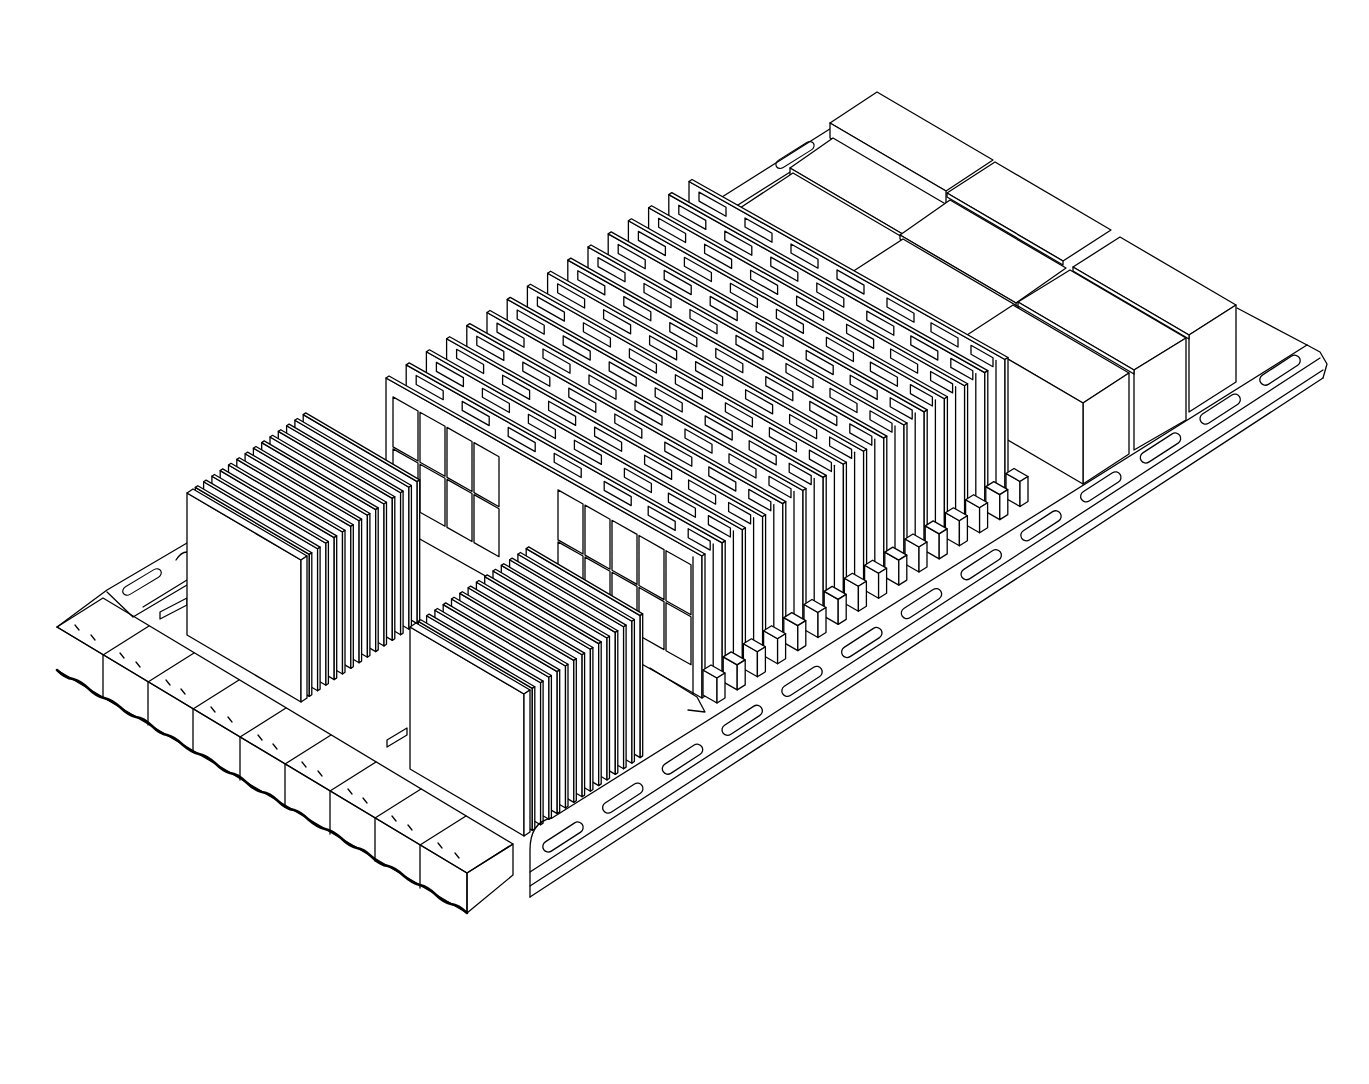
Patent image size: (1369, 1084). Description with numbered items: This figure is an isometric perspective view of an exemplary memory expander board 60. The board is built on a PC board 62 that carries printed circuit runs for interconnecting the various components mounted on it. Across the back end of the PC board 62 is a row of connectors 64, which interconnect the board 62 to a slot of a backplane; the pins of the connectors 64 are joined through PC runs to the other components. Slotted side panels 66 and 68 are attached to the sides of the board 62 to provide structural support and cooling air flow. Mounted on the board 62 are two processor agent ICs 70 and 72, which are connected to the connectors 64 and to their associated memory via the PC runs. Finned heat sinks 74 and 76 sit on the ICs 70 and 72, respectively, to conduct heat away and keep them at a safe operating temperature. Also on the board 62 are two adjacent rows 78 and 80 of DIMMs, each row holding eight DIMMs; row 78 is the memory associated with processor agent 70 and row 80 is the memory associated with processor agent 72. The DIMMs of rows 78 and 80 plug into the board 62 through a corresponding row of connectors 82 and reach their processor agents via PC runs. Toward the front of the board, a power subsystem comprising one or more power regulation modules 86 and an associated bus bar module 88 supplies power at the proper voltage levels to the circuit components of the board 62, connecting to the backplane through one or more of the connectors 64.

The memory expander board 60 is at (700, 493).
The PC board 62 is at (1256, 344).
The connectors 64 is at (223, 753).
The slotted side panel 66 is at (835, 668).
The slotted side panel 68 is at (133, 567).
The processor agent IC 70 is at (177, 605).
The processor agent IC 72 is at (403, 733).
The finned heat sink 74 is at (248, 632).
The finned heat sink 76 is at (473, 757).
The row of DIMMs 78 is at (517, 257).
The row of DIMMs 80 is at (677, 156).
The connectors 82 is at (873, 603).
The power regulation module 86 is at (772, 185).
The bus bar module 88 is at (848, 110).